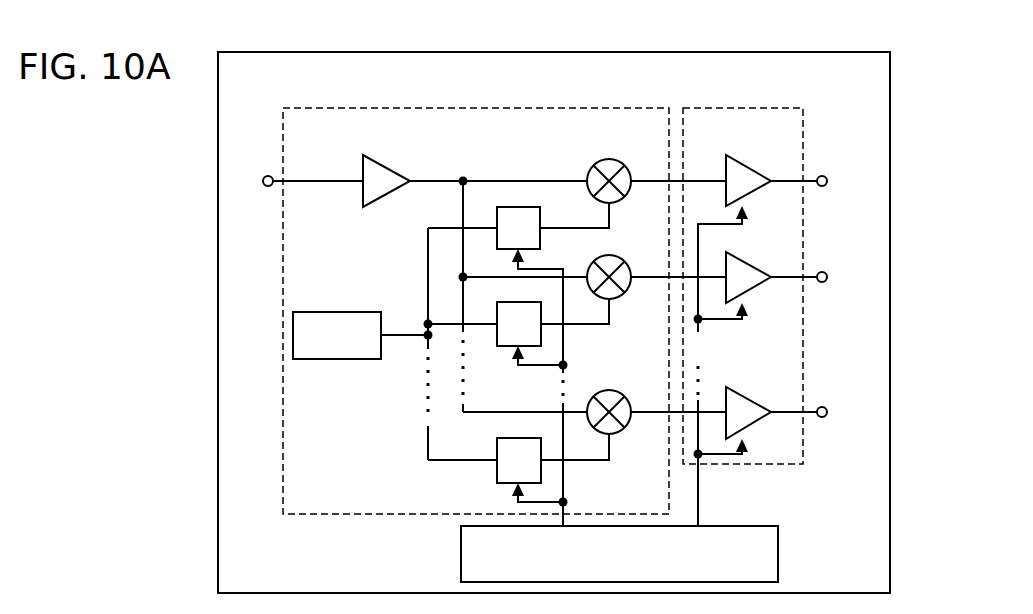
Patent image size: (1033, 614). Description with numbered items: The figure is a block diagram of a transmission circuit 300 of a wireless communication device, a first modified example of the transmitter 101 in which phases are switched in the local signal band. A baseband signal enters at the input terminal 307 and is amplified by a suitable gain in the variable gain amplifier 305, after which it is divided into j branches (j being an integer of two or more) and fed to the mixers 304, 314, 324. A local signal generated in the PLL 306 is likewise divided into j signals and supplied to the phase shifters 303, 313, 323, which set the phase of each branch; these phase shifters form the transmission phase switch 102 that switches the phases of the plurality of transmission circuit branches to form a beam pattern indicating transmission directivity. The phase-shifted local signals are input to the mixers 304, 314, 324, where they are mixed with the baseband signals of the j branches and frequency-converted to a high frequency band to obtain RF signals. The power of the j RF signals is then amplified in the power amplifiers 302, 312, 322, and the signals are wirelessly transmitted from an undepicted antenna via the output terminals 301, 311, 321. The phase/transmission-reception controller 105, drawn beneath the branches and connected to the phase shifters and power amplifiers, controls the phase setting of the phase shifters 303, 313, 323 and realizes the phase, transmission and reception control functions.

The transmission circuit 300 is at (828, 52).
The transmitter 101 is at (740, 108).
The transmission phase switch 102 is at (612, 108).
The phase/transmission-reception controller 105 is at (779, 546).
The input terminal 307 is at (264, 177).
The variable gain amplifier 305 is at (380, 158).
The PLL 306 is at (357, 312).
The phase shifter 303 is at (524, 207).
The phase shifter 313 is at (505, 347).
The phase shifter 323 is at (505, 439).
The mixer 304 is at (625, 165).
The mixer 314 is at (625, 262).
The mixer 324 is at (625, 397).
The power amplifier 302 is at (740, 163).
The power amplifier 312 is at (740, 260).
The power amplifier 322 is at (740, 395).
The output terminal 301 is at (826, 178).
The output terminal 311 is at (826, 274).
The output terminal 321 is at (826, 409).